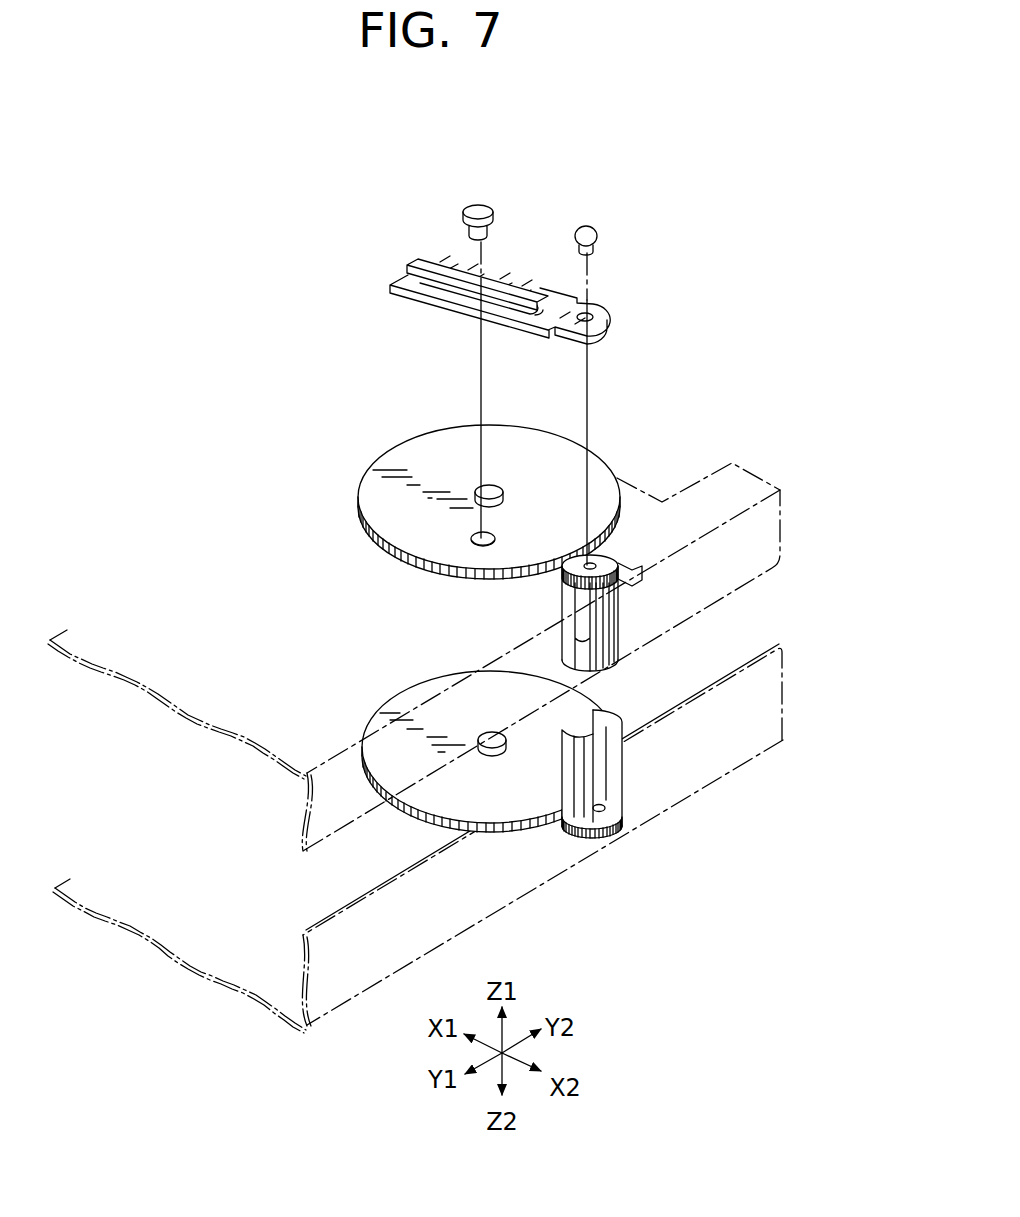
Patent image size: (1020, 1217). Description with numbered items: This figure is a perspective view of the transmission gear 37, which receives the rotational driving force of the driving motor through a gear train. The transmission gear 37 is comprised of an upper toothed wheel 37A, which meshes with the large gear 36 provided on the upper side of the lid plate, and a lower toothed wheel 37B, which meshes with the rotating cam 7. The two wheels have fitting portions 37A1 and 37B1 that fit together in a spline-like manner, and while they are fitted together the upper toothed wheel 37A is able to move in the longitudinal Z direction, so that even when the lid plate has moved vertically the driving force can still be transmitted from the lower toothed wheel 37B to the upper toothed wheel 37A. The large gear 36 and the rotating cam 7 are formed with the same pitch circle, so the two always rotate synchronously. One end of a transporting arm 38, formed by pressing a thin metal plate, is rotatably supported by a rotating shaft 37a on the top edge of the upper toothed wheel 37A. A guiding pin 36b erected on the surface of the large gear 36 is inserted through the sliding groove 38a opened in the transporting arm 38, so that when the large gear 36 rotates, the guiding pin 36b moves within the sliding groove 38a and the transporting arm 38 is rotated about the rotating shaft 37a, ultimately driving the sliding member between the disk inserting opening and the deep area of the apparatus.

The rotating cam 7 is at (427, 793).
The large gear 36 is at (407, 463).
The guiding pin 36b is at (478, 205).
The transmission gear 37 is at (847, 605).
The upper toothed wheel 37A is at (636, 613).
The fitting portion 37A1 is at (581, 636).
The lower toothed wheel 37B is at (701, 752).
The fitting portion 37B1 is at (600, 777).
The rotating shaft 37a is at (587, 226).
The transporting arm 38 is at (437, 264).
The sliding groove 38a is at (419, 277).